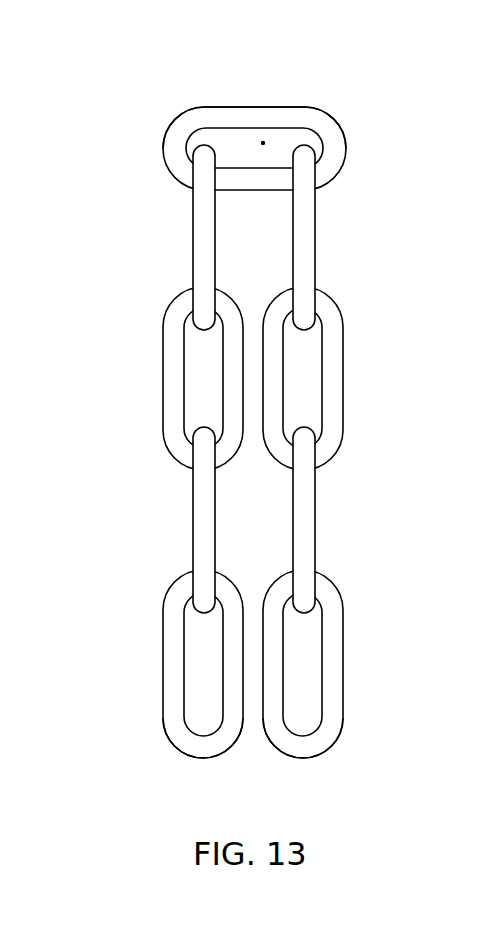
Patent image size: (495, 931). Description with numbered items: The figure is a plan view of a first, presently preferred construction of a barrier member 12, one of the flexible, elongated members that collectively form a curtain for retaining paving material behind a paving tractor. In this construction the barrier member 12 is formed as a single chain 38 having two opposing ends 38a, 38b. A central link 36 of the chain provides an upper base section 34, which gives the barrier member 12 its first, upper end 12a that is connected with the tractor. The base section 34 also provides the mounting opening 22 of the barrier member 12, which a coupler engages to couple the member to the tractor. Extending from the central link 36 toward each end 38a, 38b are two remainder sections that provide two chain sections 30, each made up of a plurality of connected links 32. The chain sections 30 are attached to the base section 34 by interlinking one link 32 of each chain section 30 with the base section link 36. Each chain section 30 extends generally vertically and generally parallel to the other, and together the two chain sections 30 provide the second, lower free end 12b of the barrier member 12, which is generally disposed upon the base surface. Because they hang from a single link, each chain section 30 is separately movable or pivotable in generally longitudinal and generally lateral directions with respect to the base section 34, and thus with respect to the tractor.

The barrier member 12 is at (103, 355).
The first, upper end 12a is at (303, 107).
The second, lower free end 12b is at (222, 752).
The mounting opening 22 is at (263, 143).
The chain section 30 is at (180, 515).
The link 32 is at (263, 475).
The upper base section 34 is at (235, 117).
The single chain link 36 is at (332, 127).
The single chain 38 is at (354, 327).
The end of chain 38a is at (177, 742).
The end of chain 38b is at (322, 740).